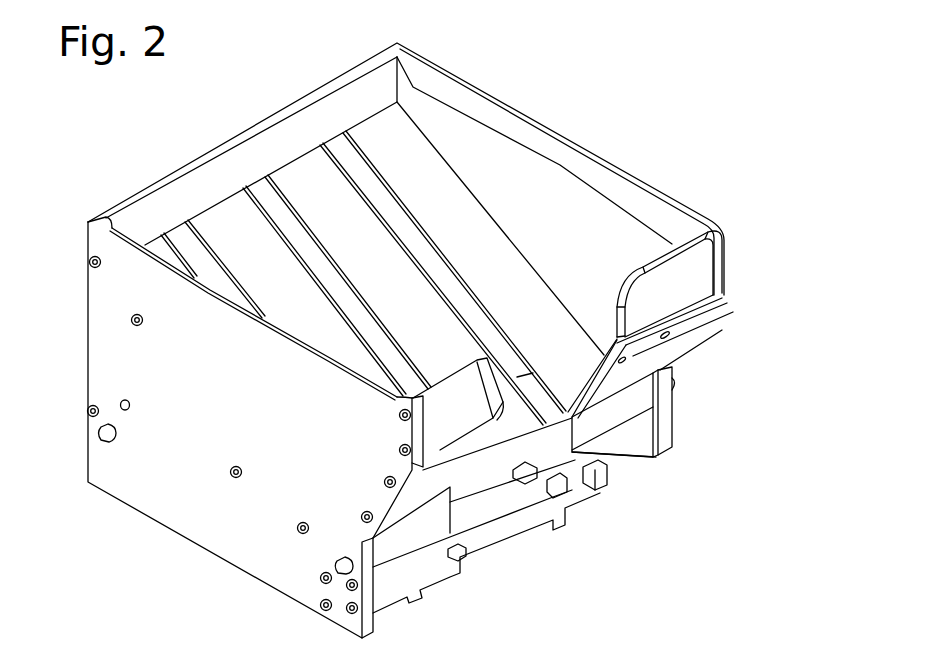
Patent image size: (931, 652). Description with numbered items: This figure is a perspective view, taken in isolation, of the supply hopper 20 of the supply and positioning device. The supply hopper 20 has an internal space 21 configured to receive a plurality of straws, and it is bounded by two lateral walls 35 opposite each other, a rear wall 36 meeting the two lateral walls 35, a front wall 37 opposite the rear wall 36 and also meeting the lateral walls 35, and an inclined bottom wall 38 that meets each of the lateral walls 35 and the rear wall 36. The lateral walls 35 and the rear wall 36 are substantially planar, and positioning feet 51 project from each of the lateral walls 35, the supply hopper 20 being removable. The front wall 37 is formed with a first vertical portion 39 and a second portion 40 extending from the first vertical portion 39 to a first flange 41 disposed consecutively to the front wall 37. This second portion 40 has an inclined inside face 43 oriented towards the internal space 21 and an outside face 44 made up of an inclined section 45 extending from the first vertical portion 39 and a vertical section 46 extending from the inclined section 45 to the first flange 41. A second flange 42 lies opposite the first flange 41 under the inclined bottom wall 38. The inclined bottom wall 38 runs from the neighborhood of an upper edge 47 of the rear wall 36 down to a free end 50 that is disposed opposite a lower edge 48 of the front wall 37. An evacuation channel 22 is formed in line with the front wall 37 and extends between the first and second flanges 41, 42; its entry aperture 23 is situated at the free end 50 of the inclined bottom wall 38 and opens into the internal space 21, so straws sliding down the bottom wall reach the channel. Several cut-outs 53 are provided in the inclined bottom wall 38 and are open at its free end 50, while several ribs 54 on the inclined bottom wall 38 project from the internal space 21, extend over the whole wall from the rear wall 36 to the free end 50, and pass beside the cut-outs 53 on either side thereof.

The supply hopper 20 is at (607, 72).
The internal space 21 is at (481, 168).
The evacuation channel 22 is at (522, 480).
The entry aperture 23 is at (555, 440).
The lateral walls 35 is at (223, 393).
The rear wall 36 is at (268, 143).
The front wall 37 is at (667, 270).
The inclined bottom wall 38 is at (383, 263).
The first vertical portion 39 is at (673, 303).
The second portion 40 is at (643, 392).
The first flange 41 is at (640, 433).
The second flange 42 is at (458, 553).
The inclined inside face 43 is at (579, 373).
The outside face 44 is at (682, 323).
The inclined section 45 is at (660, 363).
The vertical section 46 is at (627, 420).
The upper edge 47 is at (328, 88).
The lower edge 48 is at (583, 467).
The free end 50 is at (472, 498).
The positioning feet 51 is at (100, 435).
The cut-outs 53 is at (523, 380).
The ribs 54 is at (357, 179).